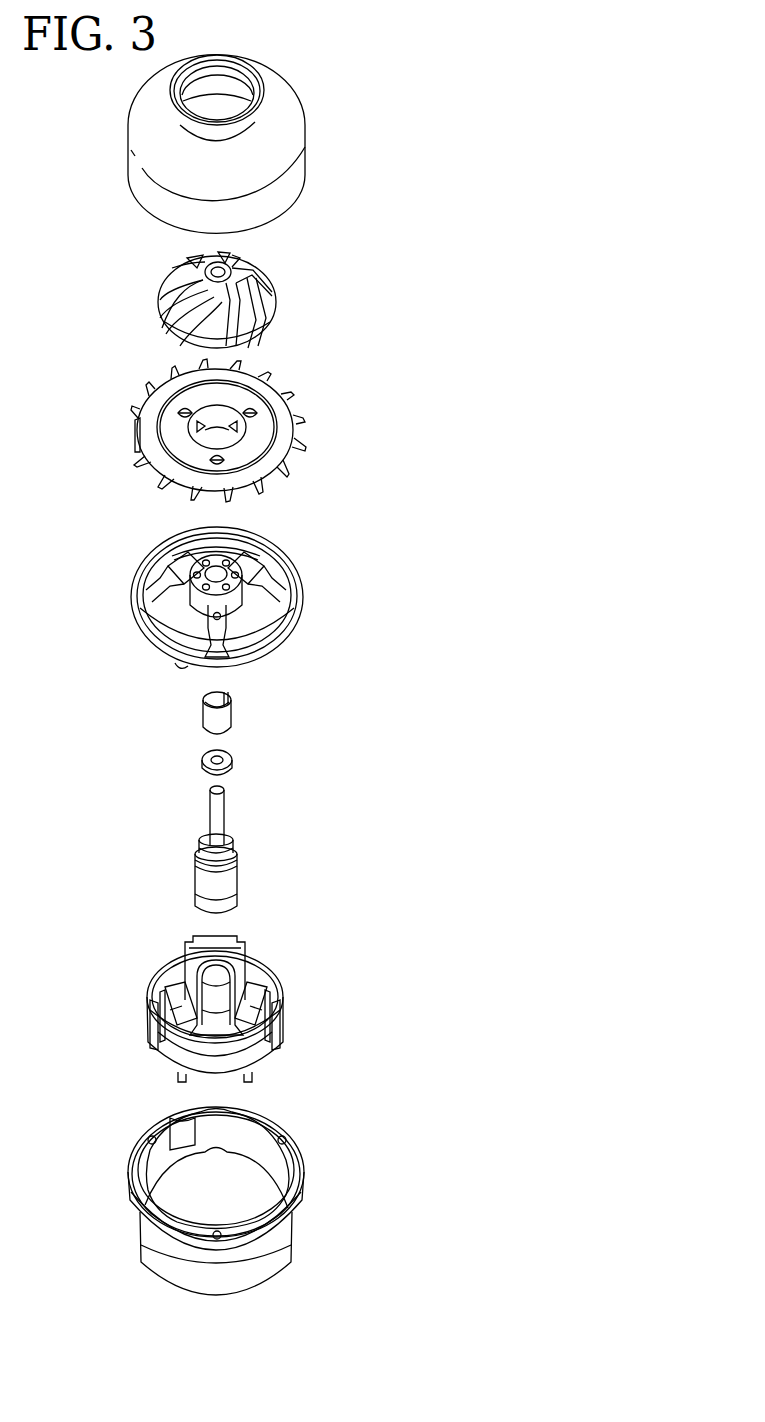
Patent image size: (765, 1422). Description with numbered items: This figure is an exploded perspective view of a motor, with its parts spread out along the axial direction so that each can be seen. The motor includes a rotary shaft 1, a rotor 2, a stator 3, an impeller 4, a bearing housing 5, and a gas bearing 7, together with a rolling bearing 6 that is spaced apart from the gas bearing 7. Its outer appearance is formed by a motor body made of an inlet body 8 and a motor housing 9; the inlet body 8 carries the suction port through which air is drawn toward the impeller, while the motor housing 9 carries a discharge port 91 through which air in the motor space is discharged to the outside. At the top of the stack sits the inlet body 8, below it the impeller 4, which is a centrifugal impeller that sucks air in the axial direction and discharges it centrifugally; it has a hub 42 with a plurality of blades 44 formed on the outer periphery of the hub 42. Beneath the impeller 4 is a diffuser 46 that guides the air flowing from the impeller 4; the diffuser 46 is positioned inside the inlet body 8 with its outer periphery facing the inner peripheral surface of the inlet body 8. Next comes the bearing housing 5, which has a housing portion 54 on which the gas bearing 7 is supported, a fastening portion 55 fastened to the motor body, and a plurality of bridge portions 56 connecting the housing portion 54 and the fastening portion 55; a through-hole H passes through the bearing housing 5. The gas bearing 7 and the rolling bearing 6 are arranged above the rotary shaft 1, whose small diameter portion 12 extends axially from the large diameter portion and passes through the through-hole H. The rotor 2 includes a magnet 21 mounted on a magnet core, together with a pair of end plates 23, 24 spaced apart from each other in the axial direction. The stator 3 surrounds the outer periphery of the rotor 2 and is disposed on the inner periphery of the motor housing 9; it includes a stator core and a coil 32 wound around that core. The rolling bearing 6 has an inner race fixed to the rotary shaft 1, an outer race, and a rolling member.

The rotary shaft 1 is at (188, 798).
The rotor 2 is at (253, 875).
The stator 3 is at (261, 1009).
The impeller 4 is at (274, 299).
The bearing housing 5 is at (213, 580).
The rolling bearing 6 is at (233, 760).
The gas bearing 7 is at (232, 713).
The inlet body 8 is at (290, 117).
The motor housing 9 is at (222, 1201).
The small diameter portion 12 is at (225, 806).
The magnet 21 is at (236, 880).
The end plate 23 is at (238, 858).
The end plate 24 is at (239, 902).
The coil 32 is at (258, 1000).
The hub 42 is at (263, 300).
The blades 44 is at (238, 265).
The diffuser 46 is at (277, 398).
The housing portion 54 is at (233, 567).
The fastening portion 55 is at (291, 618).
The bridge portions 56 is at (278, 578).
The discharge port 91 is at (180, 1203).
The through-hole H is at (219, 572).